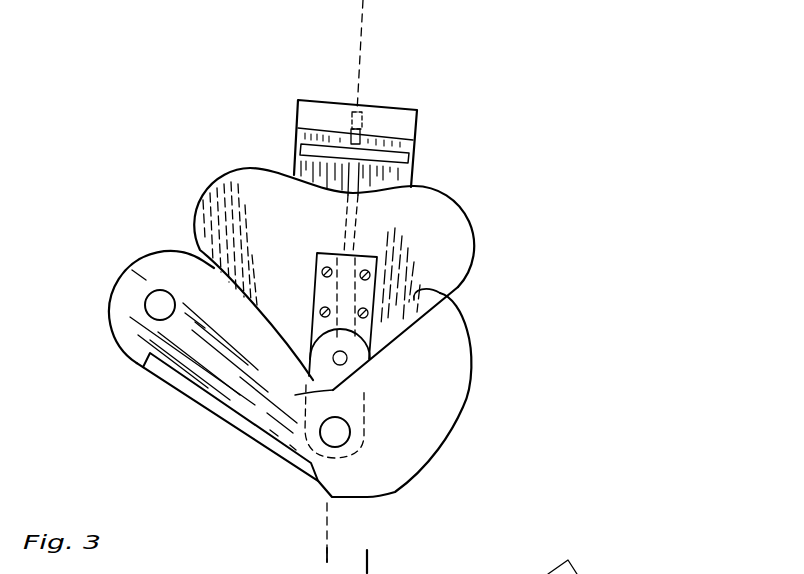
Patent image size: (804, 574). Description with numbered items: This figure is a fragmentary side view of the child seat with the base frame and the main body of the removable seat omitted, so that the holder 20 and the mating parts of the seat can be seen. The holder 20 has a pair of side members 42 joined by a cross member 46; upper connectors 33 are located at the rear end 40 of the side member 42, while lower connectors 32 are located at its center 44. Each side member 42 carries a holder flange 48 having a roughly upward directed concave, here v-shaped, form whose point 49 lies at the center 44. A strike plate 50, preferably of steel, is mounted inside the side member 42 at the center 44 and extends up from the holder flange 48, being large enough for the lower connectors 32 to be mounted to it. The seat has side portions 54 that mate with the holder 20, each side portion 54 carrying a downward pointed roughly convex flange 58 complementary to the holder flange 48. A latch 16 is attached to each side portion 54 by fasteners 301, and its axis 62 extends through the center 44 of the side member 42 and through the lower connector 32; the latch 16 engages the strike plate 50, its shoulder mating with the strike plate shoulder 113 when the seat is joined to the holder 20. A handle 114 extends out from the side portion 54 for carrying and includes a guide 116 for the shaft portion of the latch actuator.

The holder 20 is at (178, 256).
The rear end 40 is at (160, 280).
The upper connectors 33 is at (147, 308).
The lower connectors 32 is at (320, 441).
The cross member 46 is at (268, 442).
The point 49 is at (295, 395).
The center 44 is at (333, 449).
The side members 42 is at (410, 453).
The strike plates 50 is at (272, 330).
The side portions 54 is at (423, 212).
The holder flange 48 is at (452, 297).
The flange 58 is at (385, 323).
The strike plate shoulder 113 is at (360, 337).
The fasteners 301 is at (317, 253).
The handles 114 is at (318, 110).
The guide 116 is at (362, 118).
The latch 16 is at (382, 138).
The axis 62 is at (327, 555).